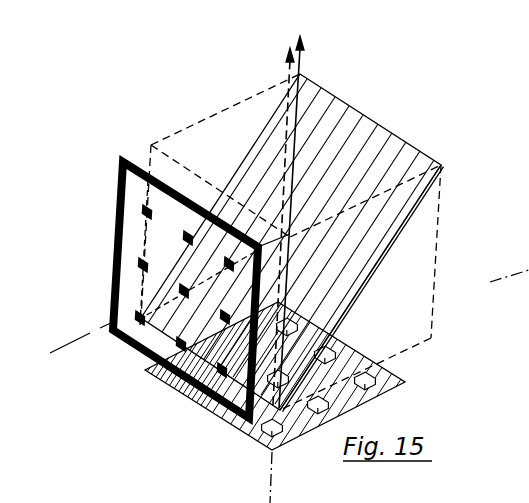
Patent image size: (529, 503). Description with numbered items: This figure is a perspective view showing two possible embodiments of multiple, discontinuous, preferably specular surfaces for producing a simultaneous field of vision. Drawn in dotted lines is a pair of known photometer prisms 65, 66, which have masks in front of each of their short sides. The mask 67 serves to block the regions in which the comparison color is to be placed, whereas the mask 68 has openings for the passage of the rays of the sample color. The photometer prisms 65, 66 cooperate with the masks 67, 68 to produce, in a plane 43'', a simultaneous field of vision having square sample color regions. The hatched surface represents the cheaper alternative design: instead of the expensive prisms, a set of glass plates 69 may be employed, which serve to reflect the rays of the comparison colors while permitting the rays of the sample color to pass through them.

The photometer prism 65 is at (192, 134).
The photometer prism 66 is at (428, 310).
The plane 43'' is at (292, 242).
The set of glass plates 69 is at (398, 237).
The mask 67 is at (135, 333).
The mask 68 is at (258, 448).